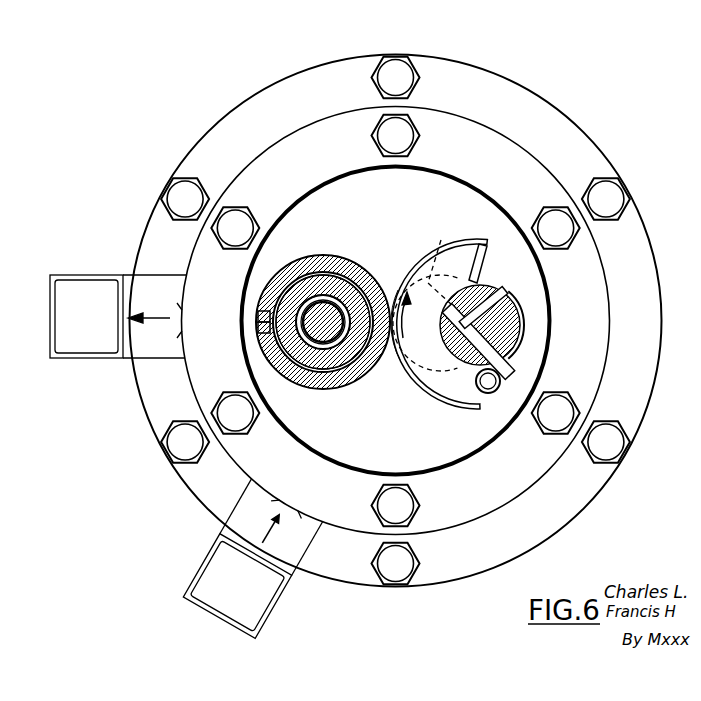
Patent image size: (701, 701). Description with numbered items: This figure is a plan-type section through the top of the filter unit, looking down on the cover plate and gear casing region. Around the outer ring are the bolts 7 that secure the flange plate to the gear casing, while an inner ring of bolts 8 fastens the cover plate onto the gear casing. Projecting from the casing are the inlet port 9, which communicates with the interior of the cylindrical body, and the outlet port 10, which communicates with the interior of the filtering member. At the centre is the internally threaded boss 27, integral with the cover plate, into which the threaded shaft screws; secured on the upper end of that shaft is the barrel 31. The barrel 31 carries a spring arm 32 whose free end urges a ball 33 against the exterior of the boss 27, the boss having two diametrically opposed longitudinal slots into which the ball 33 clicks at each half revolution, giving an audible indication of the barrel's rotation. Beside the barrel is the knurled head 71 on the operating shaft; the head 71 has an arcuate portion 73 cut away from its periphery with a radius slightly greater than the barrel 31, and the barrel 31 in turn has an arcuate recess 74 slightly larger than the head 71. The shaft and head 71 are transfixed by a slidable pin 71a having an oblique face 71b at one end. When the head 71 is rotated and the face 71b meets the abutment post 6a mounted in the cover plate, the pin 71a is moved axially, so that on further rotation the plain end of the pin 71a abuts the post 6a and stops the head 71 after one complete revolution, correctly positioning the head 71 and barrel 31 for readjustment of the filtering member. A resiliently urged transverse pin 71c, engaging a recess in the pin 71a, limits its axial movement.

The abutment post 6a is at (489, 393).
The bolts 7 is at (392, 75).
The bolts 8 is at (408, 135).
The inlet port 9 is at (245, 597).
The outlet port 10 is at (98, 300).
The internally threaded boss 27 is at (333, 358).
The barrel 31 is at (325, 256).
The spring arm 32 is at (261, 315).
The ball 33 is at (262, 330).
The knurled head 71 is at (446, 392).
The pin 71a is at (507, 370).
The oblique face 71b is at (441, 240).
The transverse pin 71c is at (481, 285).
The arcuate portion 73 is at (403, 266).
The arcuate recess 74 is at (396, 366).